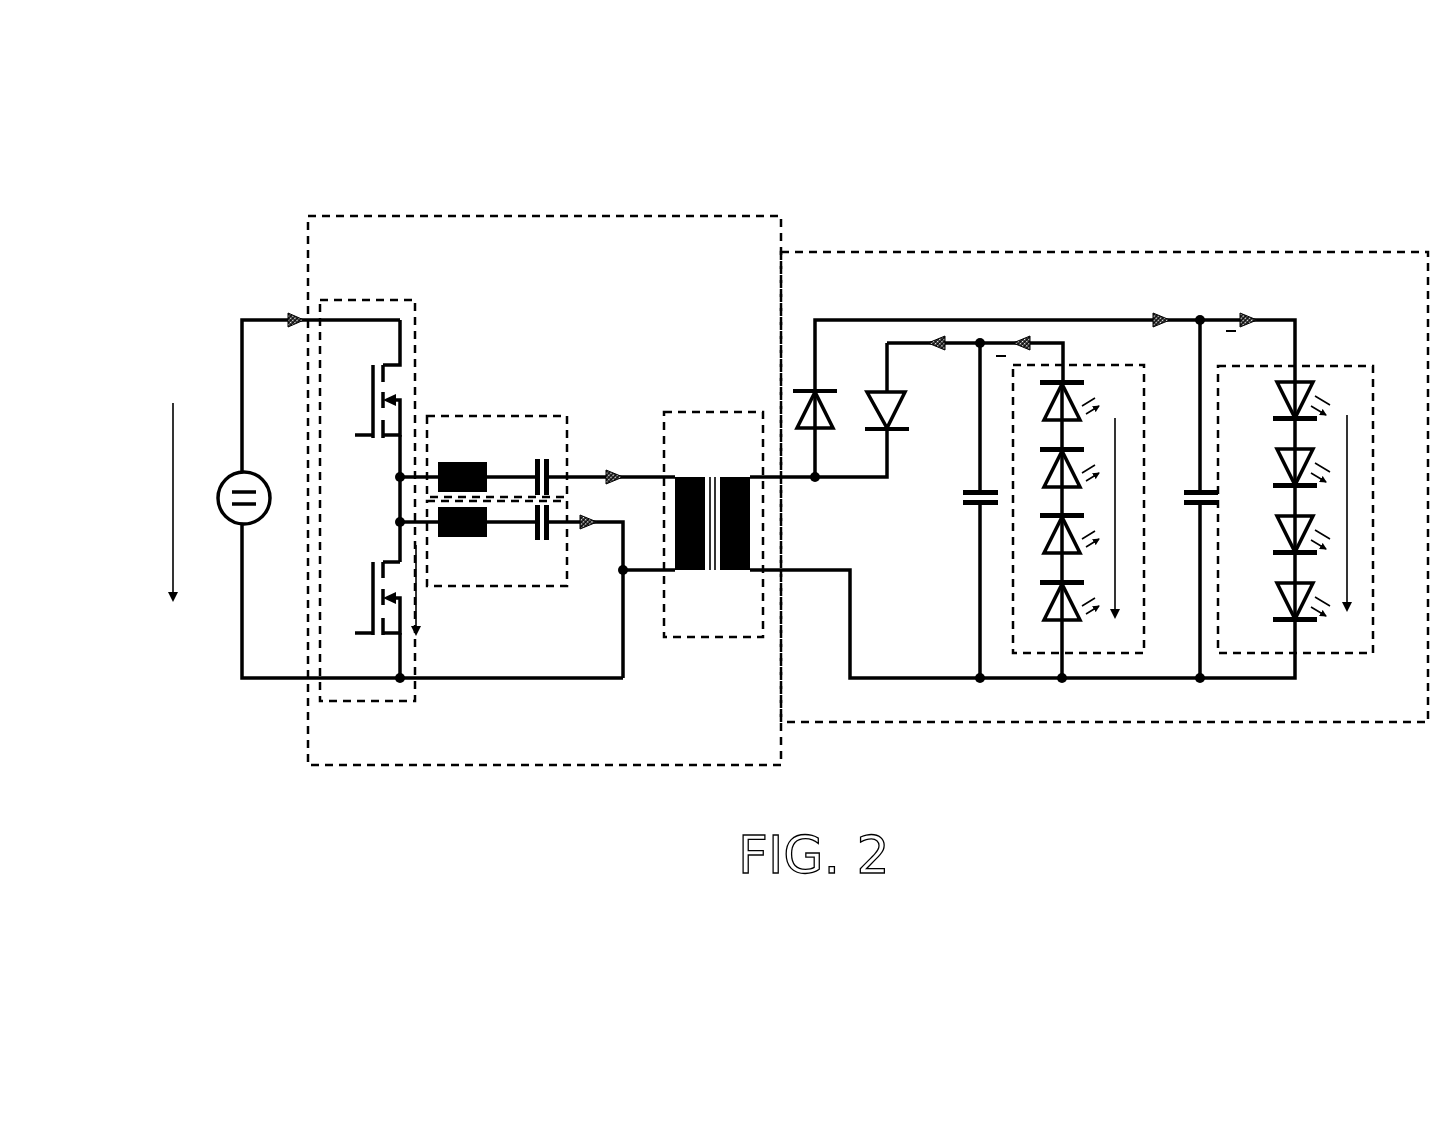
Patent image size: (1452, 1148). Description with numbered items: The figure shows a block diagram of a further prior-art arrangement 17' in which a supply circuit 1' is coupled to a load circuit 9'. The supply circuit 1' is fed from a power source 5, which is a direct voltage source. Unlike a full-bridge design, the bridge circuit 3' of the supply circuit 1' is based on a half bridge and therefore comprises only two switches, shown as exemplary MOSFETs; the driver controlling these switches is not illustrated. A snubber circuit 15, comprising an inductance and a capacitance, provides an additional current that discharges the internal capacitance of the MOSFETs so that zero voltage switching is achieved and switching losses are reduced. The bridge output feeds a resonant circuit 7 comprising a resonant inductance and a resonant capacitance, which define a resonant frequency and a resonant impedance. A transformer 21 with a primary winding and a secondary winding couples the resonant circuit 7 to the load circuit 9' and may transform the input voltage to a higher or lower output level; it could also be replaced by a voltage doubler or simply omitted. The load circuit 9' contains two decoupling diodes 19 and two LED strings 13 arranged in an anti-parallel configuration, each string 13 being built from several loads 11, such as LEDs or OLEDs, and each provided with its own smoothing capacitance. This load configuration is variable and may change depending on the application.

The LED driver device 17' is at (790, 455).
The supply circuit 1' is at (544, 458).
The bridge circuit 3' is at (367, 468).
The power source 5 is at (232, 470).
The resonant circuit 7 is at (503, 413).
The snubber circuit 15 is at (495, 588).
The transformer 21 is at (714, 410).
The load circuit 9' is at (1089, 455).
The decoupling diodes 19 is at (880, 390).
The LED string 13 is at (1100, 364).
The loads 11 is at (1046, 403).